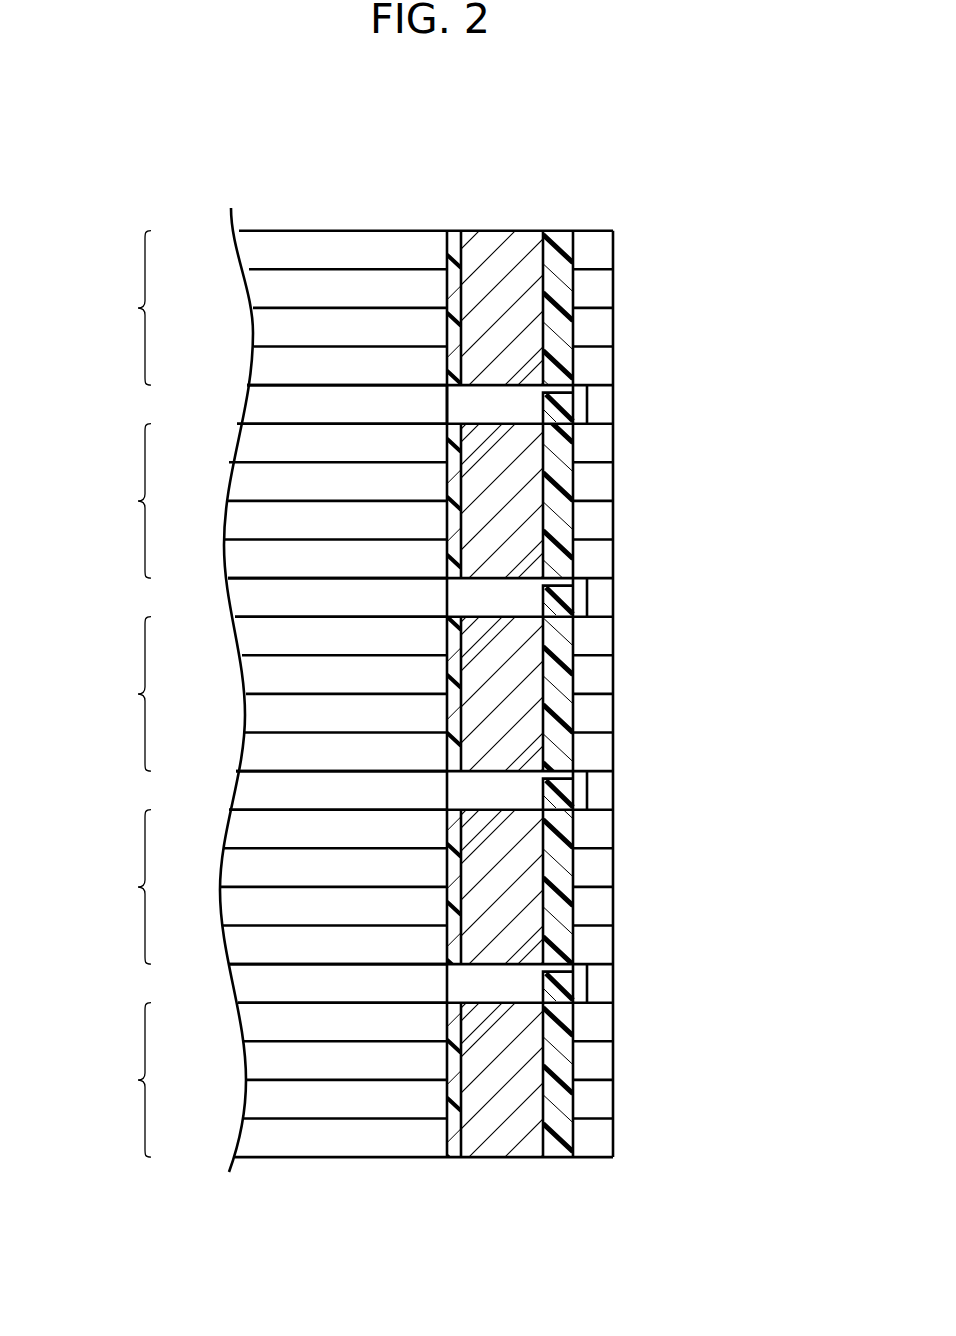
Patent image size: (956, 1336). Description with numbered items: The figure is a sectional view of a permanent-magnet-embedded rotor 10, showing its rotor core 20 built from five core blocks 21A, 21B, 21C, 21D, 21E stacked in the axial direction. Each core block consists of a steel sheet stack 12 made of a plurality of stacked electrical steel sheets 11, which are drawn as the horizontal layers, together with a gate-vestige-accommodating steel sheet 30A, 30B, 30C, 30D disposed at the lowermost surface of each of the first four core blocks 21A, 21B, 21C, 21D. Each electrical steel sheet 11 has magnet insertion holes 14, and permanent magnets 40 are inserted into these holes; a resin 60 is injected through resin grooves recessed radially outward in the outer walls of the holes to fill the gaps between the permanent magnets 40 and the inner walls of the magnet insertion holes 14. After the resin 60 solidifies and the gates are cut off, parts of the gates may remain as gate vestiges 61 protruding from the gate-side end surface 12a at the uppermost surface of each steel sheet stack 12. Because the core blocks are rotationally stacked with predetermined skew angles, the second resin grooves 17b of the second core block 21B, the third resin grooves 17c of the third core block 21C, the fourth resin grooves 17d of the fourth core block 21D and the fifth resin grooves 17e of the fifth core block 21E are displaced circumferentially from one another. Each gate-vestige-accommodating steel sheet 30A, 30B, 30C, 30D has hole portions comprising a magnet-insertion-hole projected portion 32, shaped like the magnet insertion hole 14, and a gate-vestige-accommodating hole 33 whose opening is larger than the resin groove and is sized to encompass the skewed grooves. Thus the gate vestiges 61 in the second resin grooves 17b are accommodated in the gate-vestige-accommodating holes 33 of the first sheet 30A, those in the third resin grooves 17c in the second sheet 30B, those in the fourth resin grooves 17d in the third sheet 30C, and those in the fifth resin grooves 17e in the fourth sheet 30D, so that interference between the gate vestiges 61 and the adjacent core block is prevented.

The rotor 10 is at (613, 165).
The electrical steel sheet 11 is at (338, 363).
The steel sheet stack 12 is at (128, 694).
The gate-side end surface 12a is at (390, 423).
The magnet insertion hole 14 is at (447, 240).
The second resin groove 17b is at (574, 451).
The third resin groove 17c is at (574, 643).
The fourth resin groove 17d is at (574, 841).
The fifth resin groove 17e is at (574, 1033).
The rotor core 20 is at (279, 218).
The first core block 21A is at (631, 308).
The second core block 21B is at (631, 505).
The third core block 21C is at (631, 700).
The fourth core block 21D is at (631, 881).
The fifth core block 21E is at (631, 1083).
The first gate-vestige-accommodating steel sheet 30A is at (256, 405).
The second gate-vestige-accommodating steel sheet 30B is at (242, 598).
The third gate-vestige-accommodating steel sheet 30C is at (246, 790).
The fourth gate-vestige-accommodating steel sheet 30D is at (246, 985).
The magnet-insertion-hole projected portion 32 is at (480, 380).
The gate-vestige-accommodating hole 33 is at (586, 393).
The permanent magnet 40 is at (500, 460).
The resin 60 is at (563, 517).
The gate vestige 61 is at (563, 408).